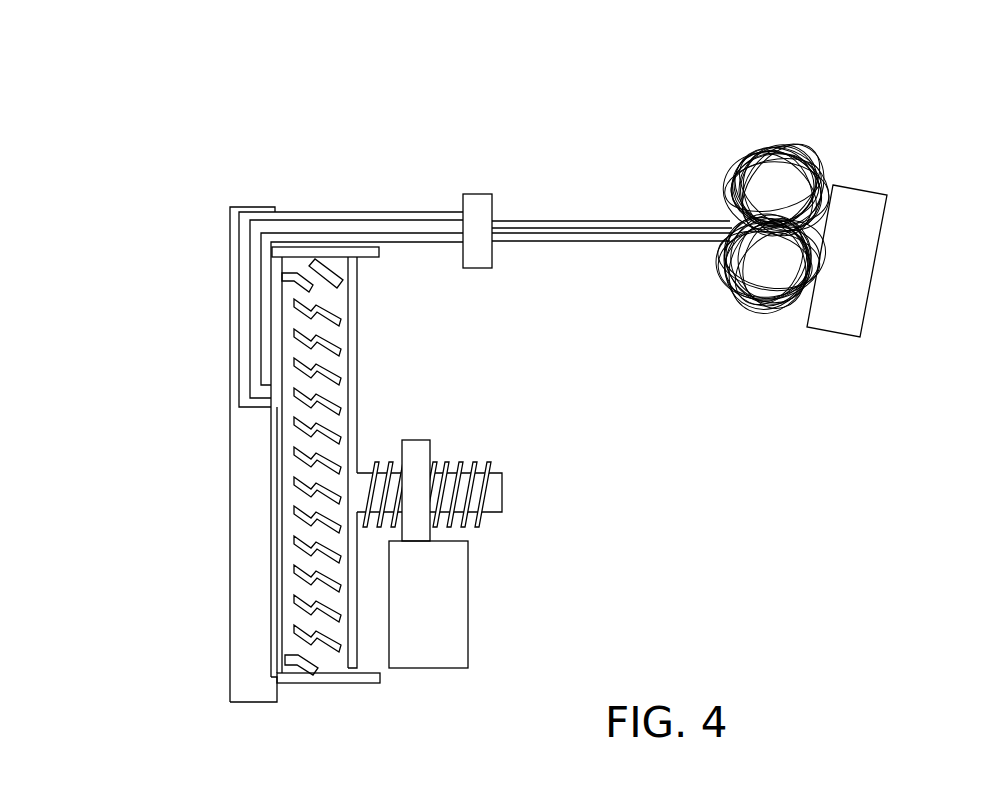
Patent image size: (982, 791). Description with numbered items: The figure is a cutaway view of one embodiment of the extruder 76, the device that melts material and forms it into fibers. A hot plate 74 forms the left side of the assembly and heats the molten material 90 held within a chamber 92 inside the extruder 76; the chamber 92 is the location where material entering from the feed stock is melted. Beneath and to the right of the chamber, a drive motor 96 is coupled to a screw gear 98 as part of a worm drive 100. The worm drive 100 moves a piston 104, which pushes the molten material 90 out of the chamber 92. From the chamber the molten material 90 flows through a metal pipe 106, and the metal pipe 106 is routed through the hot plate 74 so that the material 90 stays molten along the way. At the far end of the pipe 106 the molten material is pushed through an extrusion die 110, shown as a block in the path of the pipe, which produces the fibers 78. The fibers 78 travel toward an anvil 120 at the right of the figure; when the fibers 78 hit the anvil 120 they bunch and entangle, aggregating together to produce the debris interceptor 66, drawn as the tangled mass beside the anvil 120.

The debris interceptor 66 is at (757, 147).
The hot plate 74 is at (243, 449).
The extruder 76 is at (232, 152).
The fibers 78 is at (596, 254).
The molten material 90 is at (332, 350).
The chamber 92 is at (340, 385).
The drive motor 96 is at (448, 582).
The screw gear 98 is at (473, 463).
The worm drive 100 is at (440, 430).
The piston 104 is at (357, 300).
The metal pipe 106 is at (312, 212).
The extrusion die 110 is at (477, 192).
The anvil 120 is at (868, 227).